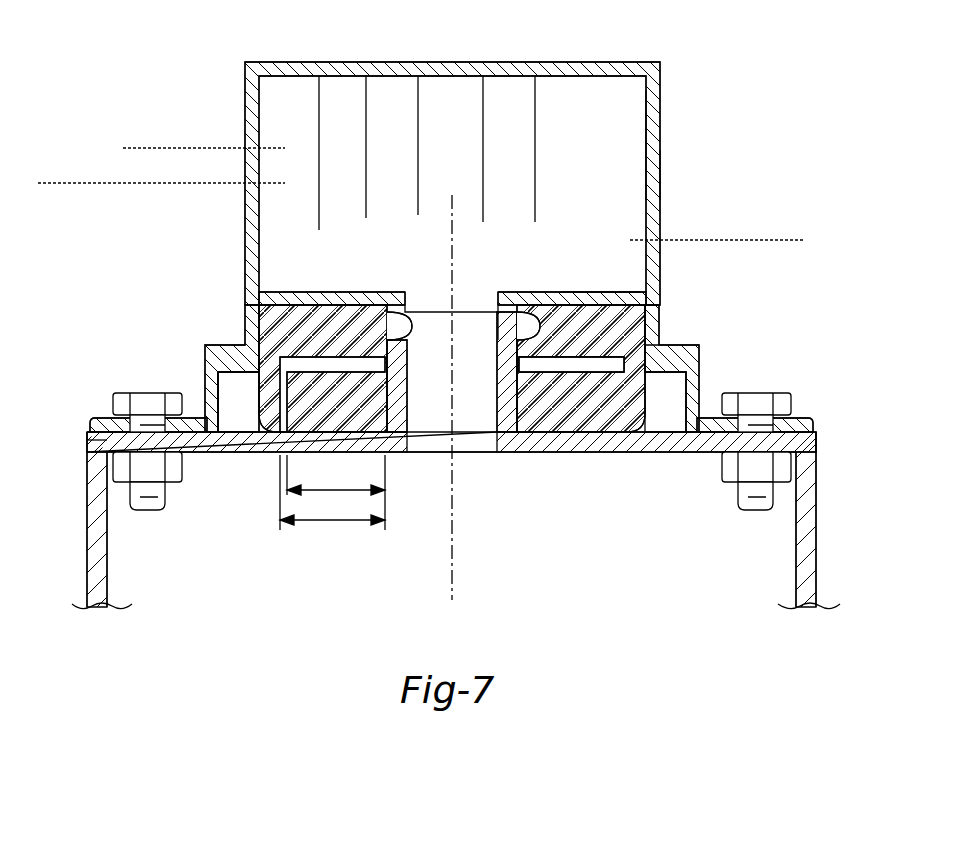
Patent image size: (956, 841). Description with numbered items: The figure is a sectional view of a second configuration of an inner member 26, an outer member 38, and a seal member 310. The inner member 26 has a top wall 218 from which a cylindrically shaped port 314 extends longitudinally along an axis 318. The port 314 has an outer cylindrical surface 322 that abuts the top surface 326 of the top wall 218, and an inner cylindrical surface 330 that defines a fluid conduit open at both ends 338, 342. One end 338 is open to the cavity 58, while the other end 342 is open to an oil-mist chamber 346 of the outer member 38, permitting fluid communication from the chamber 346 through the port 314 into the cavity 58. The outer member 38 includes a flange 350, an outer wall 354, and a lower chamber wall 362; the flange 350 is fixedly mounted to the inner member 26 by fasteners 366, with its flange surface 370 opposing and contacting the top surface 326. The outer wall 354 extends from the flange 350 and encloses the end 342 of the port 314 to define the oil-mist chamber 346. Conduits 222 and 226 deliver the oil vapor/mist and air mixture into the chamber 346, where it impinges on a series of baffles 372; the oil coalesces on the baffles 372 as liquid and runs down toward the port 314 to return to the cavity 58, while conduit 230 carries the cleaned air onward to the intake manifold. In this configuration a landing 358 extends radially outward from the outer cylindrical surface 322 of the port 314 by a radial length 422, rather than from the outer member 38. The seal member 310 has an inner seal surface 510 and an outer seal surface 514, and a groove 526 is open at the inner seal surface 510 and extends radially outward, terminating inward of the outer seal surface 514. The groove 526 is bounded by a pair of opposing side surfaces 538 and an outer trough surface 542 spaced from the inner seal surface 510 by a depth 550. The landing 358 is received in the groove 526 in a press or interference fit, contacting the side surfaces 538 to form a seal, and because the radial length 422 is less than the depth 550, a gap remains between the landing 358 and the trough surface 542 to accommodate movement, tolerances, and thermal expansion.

The outer member 38 is at (245, 90).
The oil-mist chamber 346 is at (618, 112).
The outer wall 354 is at (652, 170).
The lower chamber wall 362 is at (600, 300).
The end of the port 342 is at (428, 298).
The baffles 372 is at (364, 138).
The conduit 222 is at (136, 148).
The conduit 226 is at (62, 183).
The conduit 230 is at (780, 240).
The axis 318 is at (455, 582).
The seal member 310 is at (292, 325).
The outer seal surface 514 is at (256, 398).
The landing 358 is at (318, 333).
The inner seal surface 510 is at (392, 332).
The groove 526 is at (612, 332).
The outer trough surface 542 is at (624, 366).
The outer cylindrical surface 322 is at (549, 430).
The side surfaces 538 is at (560, 375).
The port 314 is at (500, 337).
The inner cylindrical surface 330 is at (488, 440).
The end of the port 338 is at (430, 455).
The top wall 218 is at (228, 446).
The top surface 326 is at (108, 417).
The flange 350 is at (812, 430).
The flange surface 370 is at (92, 456).
The fasteners 366 is at (137, 393).
The inner member 26 is at (96, 540).
The cavity 58 is at (782, 525).
The depth 550 is at (322, 522).
The radial length 422 is at (347, 492).